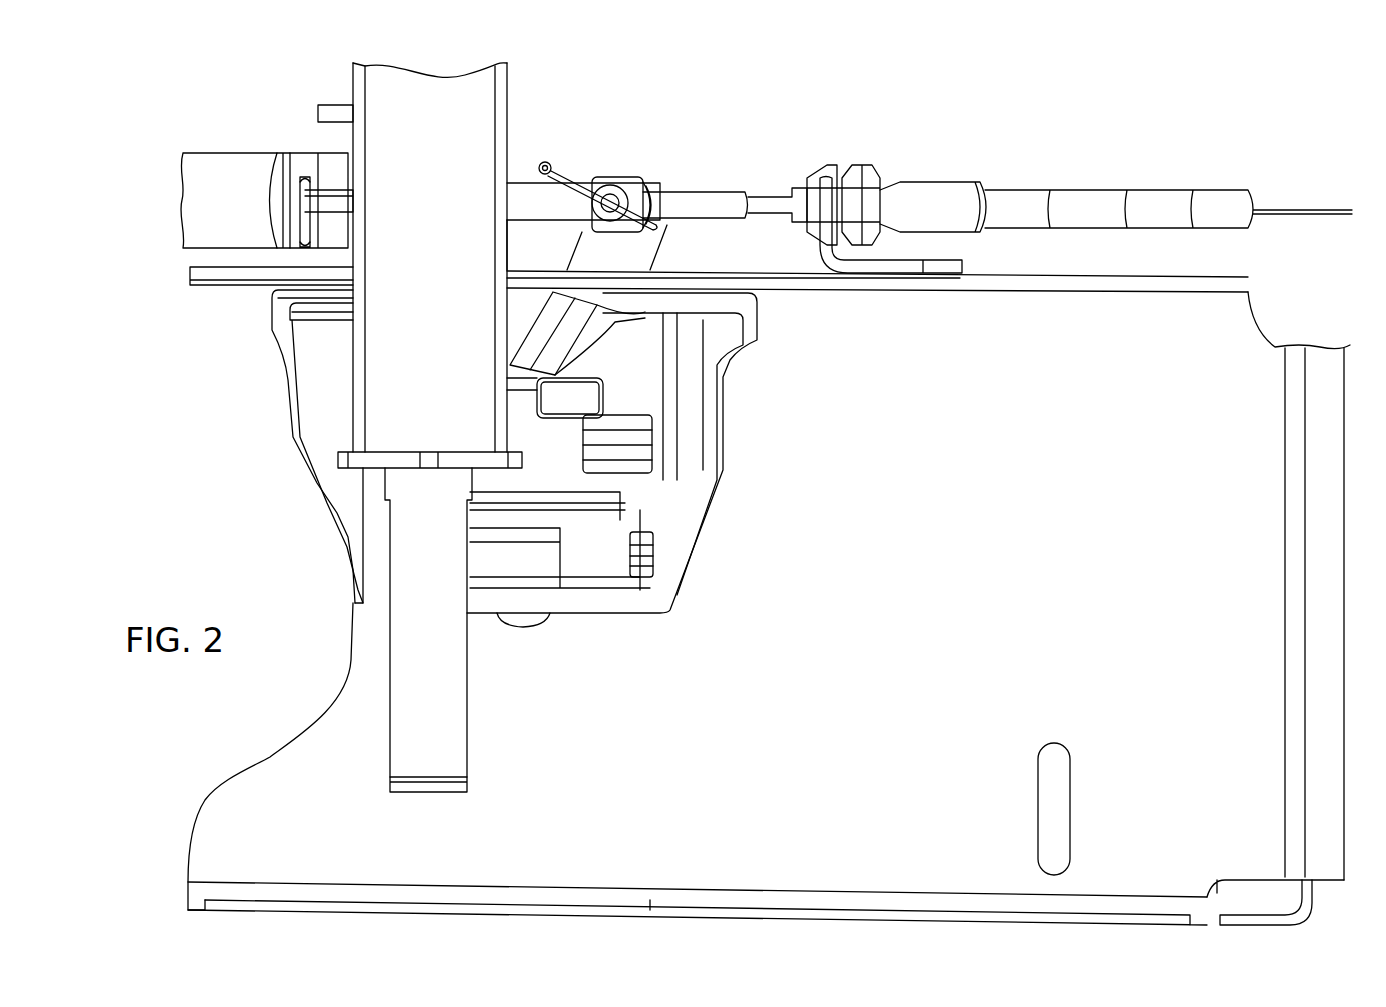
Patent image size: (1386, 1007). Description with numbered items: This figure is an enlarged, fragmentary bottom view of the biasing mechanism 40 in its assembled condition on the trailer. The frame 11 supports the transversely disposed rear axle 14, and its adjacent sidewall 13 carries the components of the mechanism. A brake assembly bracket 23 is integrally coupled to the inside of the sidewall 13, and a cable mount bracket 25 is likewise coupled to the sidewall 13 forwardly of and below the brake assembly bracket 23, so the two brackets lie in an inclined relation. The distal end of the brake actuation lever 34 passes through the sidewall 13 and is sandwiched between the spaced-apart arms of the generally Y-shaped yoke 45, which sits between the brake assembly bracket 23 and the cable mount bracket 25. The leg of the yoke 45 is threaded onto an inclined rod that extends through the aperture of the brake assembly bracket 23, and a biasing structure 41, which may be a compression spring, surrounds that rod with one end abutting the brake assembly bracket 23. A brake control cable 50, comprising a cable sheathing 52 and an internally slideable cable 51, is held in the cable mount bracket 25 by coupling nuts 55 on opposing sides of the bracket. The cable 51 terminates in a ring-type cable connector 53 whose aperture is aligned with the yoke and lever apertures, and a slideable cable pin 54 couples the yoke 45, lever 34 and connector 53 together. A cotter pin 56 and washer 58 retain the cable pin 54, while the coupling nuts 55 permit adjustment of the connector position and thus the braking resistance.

The frame 11 is at (1250, 368).
The sidewall 13 is at (880, 290).
The rear axle 14 is at (445, 697).
The brake assembly bracket 23 is at (303, 162).
The cable mount bracket 25 is at (907, 268).
The brake actuation lever 34 is at (647, 260).
The biasing mechanism 40 is at (183, 158).
The biasing structure 41 is at (232, 163).
The yoke 45 is at (527, 190).
The brake control cable 50 is at (1053, 190).
The cable 51 is at (764, 205).
The cable sheathing 52 is at (1105, 195).
The cable connector 53 is at (690, 200).
The cable pin 54 is at (612, 195).
The coupling nuts 55 is at (860, 165).
The cotter pin 56 is at (556, 164).
The washer 58 is at (643, 188).